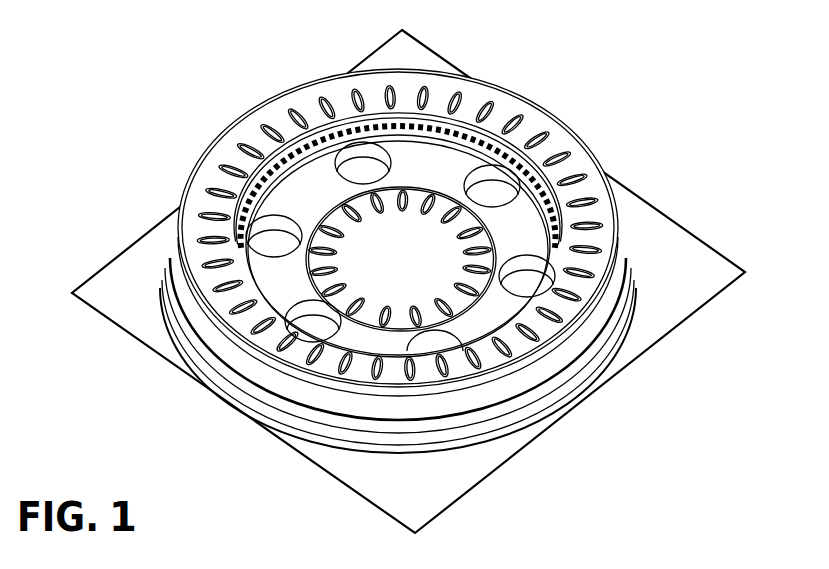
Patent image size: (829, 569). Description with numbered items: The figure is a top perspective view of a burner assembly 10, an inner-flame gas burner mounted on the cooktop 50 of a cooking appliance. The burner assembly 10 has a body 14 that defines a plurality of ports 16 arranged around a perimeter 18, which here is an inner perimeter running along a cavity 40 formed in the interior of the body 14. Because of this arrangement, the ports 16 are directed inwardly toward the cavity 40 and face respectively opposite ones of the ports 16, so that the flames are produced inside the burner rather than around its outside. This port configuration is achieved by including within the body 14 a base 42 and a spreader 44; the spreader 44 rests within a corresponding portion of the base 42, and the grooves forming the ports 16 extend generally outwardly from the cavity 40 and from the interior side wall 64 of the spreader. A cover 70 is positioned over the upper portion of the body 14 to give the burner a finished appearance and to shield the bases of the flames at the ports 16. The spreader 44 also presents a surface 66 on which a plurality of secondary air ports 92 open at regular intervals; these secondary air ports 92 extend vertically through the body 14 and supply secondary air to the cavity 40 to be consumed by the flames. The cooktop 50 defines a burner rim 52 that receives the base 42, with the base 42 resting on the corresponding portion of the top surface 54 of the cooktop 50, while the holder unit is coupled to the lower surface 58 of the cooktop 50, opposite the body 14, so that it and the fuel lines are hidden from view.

The burner assembly 10 is at (601, 103).
The body 14 is at (652, 277).
The ports 16 is at (368, 148).
The perimeter 18 is at (487, 186).
The cavity 40 is at (535, 219).
The base 42 is at (494, 397).
The spreader 44 is at (482, 320).
The cooktop 50 is at (415, 495).
The burner rim 52 is at (340, 440).
The top surface 54 is at (440, 468).
The lower surface 58 is at (126, 344).
The interior side wall 64 is at (408, 105).
The surface 66 is at (285, 283).
The cover 70 is at (247, 362).
The secondary air ports 92 is at (314, 134).